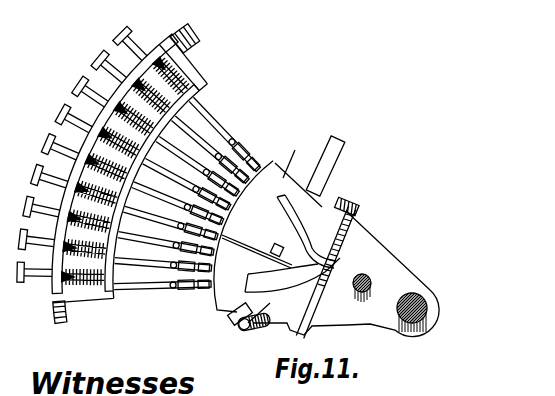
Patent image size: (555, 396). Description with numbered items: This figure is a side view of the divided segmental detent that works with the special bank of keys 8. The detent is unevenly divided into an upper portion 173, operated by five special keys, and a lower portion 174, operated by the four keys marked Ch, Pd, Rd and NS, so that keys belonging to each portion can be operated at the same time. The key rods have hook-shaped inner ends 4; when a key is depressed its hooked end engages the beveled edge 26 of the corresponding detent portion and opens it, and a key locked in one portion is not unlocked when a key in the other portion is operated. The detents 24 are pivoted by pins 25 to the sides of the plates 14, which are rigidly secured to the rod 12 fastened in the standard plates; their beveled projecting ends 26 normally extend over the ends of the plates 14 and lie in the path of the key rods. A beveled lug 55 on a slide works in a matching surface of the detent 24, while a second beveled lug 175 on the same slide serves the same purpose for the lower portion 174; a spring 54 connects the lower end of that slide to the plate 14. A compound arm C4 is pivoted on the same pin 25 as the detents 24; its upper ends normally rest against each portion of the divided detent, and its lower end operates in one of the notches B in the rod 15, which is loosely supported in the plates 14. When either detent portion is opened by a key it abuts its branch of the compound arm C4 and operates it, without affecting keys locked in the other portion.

The special bank of keys 8 is at (78, 195).
The inner ends of the key rods 4 is at (214, 254).
The plates 14 is at (397, 277).
The rod 12 is at (424, 299).
The rod 15 is at (370, 299).
The notches B is at (358, 276).
The compound arm C4 is at (305, 247).
The pins 25 is at (328, 288).
The detents 24 is at (313, 216).
The beveled lug 55 is at (328, 160).
The upper portion of the segmental detent 173 is at (289, 153).
The beveled projecting ends 26 is at (253, 187).
The beveled lug 175 is at (228, 312).
The lower portion of the segmental detent 174 is at (232, 323).
The spring 54 is at (254, 334).